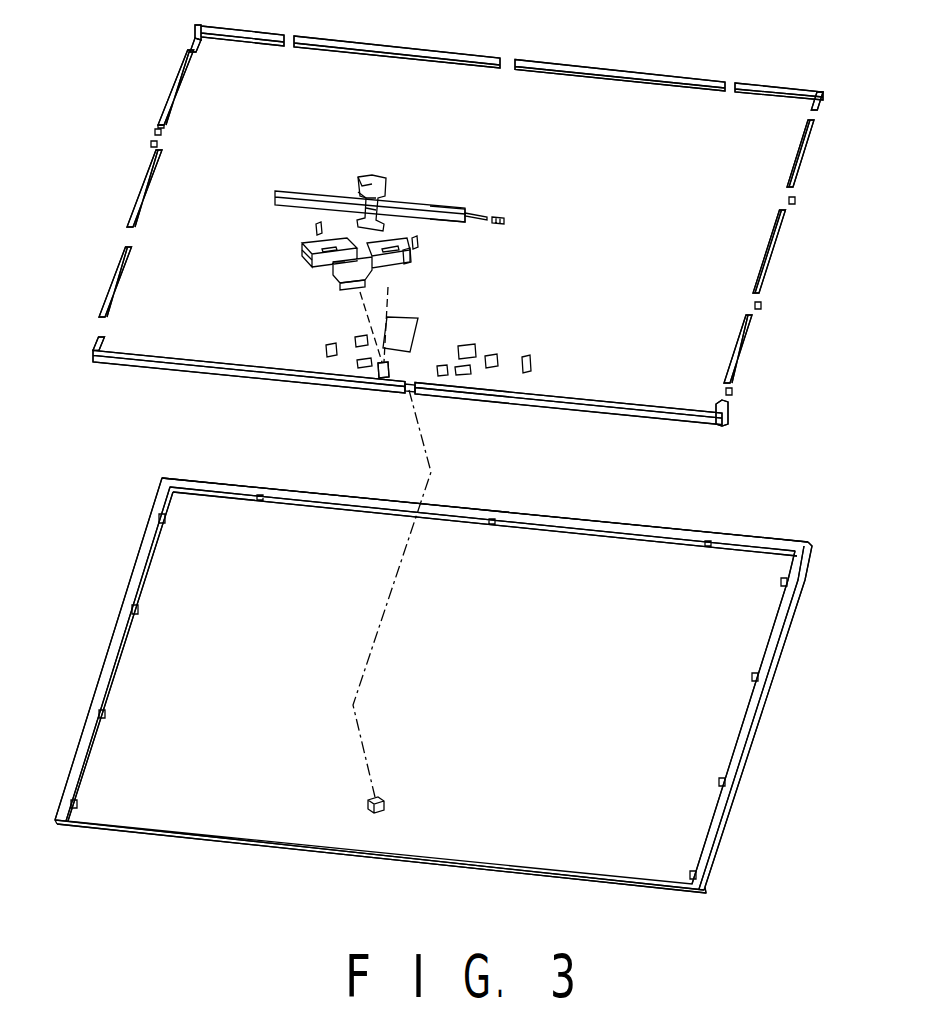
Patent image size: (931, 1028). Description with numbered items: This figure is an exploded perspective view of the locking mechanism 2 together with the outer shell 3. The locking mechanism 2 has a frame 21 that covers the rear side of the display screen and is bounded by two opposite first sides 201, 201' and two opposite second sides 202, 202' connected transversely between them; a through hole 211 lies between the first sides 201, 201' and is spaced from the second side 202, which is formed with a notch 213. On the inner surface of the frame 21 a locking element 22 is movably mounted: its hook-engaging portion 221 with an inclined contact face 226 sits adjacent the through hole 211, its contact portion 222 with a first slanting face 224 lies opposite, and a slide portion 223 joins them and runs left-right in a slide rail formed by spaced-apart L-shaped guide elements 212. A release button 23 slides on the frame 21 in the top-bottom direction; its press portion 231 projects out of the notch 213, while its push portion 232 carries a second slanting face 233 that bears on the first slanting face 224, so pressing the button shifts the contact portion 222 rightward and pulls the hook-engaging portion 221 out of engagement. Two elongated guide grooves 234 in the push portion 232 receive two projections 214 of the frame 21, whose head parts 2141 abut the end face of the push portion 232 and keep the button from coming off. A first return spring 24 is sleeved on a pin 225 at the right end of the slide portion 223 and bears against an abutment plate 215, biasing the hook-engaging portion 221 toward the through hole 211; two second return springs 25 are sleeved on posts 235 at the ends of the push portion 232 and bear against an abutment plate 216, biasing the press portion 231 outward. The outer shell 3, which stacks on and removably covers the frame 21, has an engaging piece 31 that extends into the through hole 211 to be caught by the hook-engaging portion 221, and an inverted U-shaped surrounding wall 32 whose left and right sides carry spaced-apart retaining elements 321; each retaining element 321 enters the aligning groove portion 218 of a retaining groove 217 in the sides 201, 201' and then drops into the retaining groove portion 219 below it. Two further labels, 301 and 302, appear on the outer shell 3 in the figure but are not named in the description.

The locking mechanism 2 is at (496, 165).
The frame 21 is at (236, 396).
The first side 201 is at (128, 194).
The first side 201' is at (790, 259).
The second side 202 is at (568, 415).
The second side 202' is at (509, 51).
The through hole 211 is at (441, 318).
The guide elements 212 is at (356, 338).
The notch 213 is at (411, 388).
The projections 214 is at (383, 378).
The head part 2141 is at (378, 370).
The abutment plate 215 is at (530, 357).
The abutment plate 216 is at (356, 361).
The retaining grooves 217 is at (152, 123).
The aligning groove portion 218 is at (164, 133).
The retaining groove portion 219 is at (153, 143).
The locking element 22 is at (257, 200).
The hook-engaging portion 221 is at (379, 182).
The contact portion 222 is at (377, 212).
The slide portion 223 is at (432, 218).
The first slanting face 224 is at (359, 197).
The pin 225 is at (480, 218).
The inclined contact face 226 is at (361, 186).
The release button 23 is at (291, 241).
The press portion 231 is at (343, 277).
The push portion 232 is at (300, 250).
The second slanting face 233 is at (343, 261).
The guide grooves 234 is at (332, 238).
The posts 235 is at (409, 254).
The first return spring 24 is at (500, 217).
The second return springs 25 is at (418, 232).
The outer shell 3 is at (669, 510).
The engaging piece 31 is at (384, 803).
The surrounding wall 32 is at (552, 520).
The side wall 301 is at (130, 572).
The end wall 302 is at (750, 533).
The retaining elements 321 is at (105, 714).